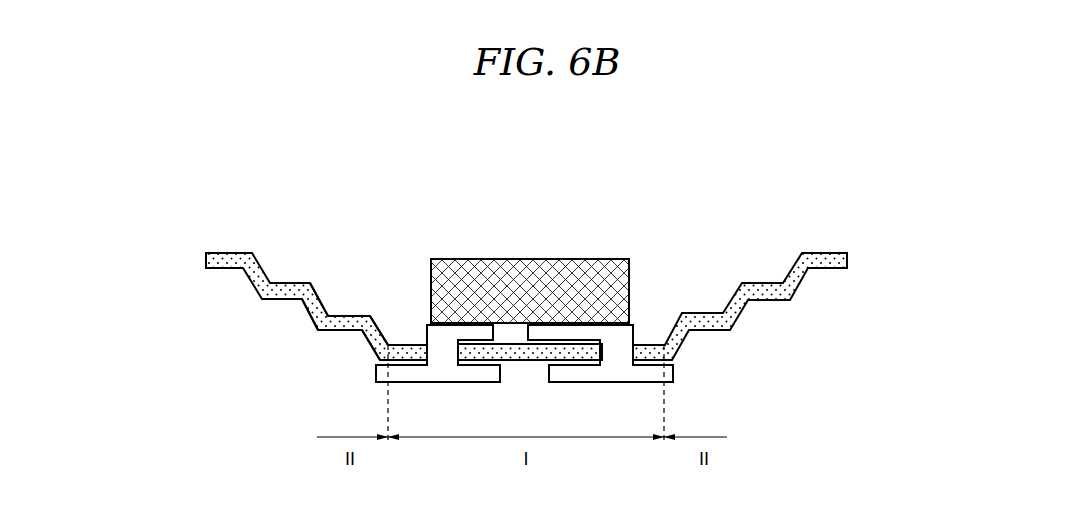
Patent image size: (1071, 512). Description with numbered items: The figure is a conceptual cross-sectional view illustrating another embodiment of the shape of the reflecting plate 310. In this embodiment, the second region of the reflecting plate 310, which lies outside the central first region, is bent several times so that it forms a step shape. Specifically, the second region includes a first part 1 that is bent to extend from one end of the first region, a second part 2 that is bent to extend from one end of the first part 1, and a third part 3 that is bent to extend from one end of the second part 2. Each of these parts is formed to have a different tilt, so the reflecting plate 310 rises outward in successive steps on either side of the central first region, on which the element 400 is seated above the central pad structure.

The first part 1 is at (383, 332).
The second part 2 is at (348, 312).
The third part 3 is at (322, 292).
The reflecting plate 310 is at (768, 298).
The semiconductor chip 400 is at (529, 259).